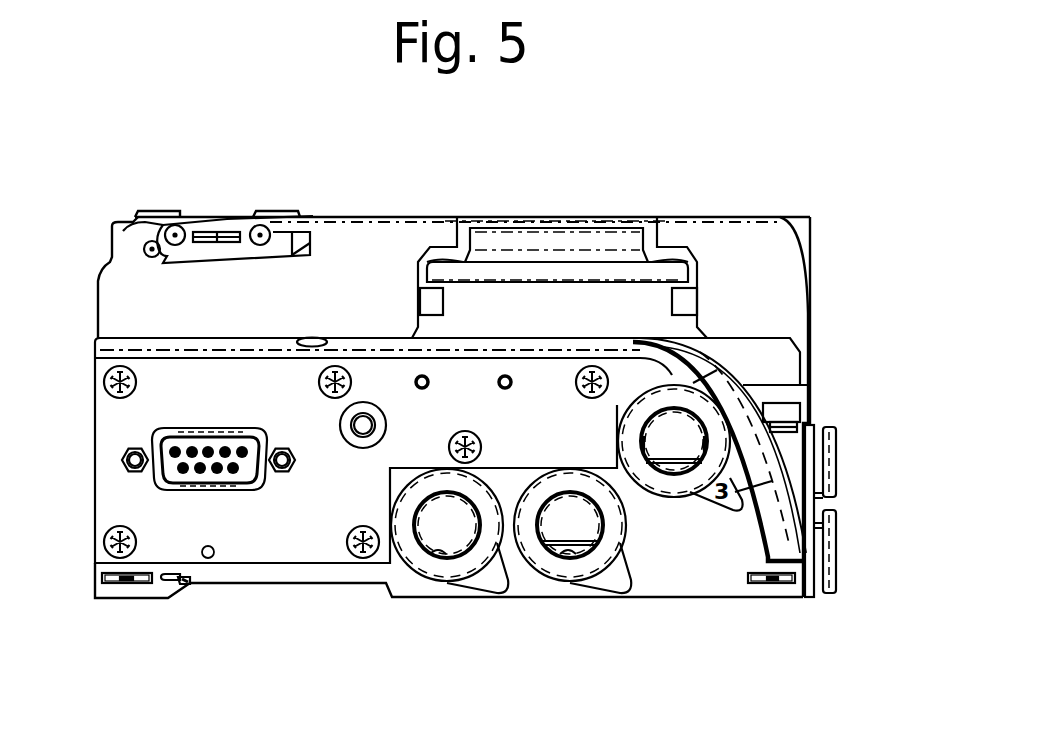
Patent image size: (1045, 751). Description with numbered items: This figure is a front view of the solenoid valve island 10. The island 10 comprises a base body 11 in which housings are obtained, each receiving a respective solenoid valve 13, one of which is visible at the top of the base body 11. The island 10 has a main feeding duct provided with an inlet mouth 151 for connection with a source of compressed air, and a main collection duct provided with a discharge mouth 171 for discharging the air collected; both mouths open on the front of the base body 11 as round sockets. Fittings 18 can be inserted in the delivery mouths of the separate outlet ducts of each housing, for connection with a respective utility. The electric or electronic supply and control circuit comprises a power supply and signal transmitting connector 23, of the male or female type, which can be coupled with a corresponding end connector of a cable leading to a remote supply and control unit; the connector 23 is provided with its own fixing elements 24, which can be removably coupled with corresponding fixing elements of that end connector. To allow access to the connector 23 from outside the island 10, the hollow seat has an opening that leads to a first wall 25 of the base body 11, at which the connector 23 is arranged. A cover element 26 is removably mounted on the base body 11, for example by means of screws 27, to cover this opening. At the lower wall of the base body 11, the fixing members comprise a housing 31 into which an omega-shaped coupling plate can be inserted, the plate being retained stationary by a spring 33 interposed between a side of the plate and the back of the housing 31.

The solenoid valve island 10 is at (822, 207).
The base body 11 is at (818, 410).
The solenoid valve 13 is at (109, 260).
The fittings 18 is at (837, 576).
The power supply and signal transmitting connector 23 is at (154, 488).
The fixing elements 24 is at (121, 468).
The first wall 25 is at (800, 558).
The cover element 26 is at (108, 434).
The screws 27 is at (100, 384).
The housing 31 is at (192, 577).
The spring 33 is at (187, 588).
The inlet mouth 151 is at (577, 556).
The discharge mouth 171 is at (447, 556).